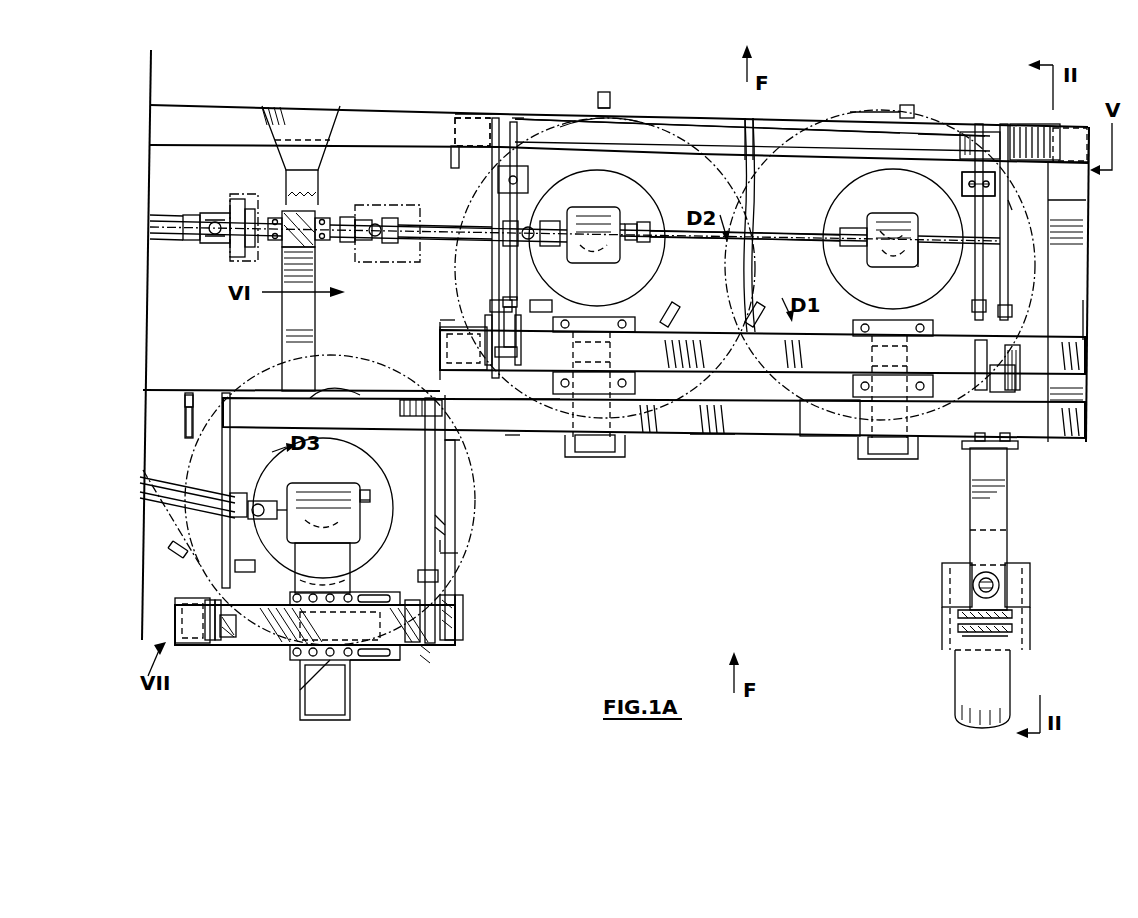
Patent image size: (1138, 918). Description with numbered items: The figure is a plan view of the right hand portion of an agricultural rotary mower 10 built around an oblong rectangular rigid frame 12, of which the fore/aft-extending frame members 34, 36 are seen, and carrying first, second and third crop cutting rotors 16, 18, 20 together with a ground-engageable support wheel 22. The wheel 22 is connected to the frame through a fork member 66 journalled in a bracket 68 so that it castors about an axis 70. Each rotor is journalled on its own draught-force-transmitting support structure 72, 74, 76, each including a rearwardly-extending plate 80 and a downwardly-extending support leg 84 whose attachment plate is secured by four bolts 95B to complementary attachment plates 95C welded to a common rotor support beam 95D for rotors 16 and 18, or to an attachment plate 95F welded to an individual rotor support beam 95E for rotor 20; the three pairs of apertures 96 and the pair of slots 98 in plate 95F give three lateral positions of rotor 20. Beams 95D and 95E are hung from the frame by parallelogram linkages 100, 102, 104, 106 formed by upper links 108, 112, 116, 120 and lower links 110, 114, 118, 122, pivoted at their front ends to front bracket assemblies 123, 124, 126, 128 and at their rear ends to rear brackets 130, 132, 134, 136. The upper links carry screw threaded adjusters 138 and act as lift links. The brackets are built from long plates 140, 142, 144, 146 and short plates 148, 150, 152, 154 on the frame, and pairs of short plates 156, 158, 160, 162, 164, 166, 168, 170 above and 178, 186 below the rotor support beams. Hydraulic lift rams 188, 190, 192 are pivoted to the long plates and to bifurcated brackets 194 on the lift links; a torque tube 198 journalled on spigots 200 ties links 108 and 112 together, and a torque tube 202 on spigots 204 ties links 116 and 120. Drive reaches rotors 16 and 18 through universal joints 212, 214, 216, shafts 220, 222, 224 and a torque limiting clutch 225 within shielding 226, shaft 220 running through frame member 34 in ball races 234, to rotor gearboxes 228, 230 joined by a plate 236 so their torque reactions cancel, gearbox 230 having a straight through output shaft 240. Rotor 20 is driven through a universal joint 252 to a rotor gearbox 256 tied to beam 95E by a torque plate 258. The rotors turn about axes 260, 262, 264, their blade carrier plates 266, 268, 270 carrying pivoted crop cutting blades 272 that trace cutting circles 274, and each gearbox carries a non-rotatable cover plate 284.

The agricultural rotary mower 10 is at (608, 530).
The frame 12 is at (1093, 122).
The first crop cutting rotor 16 is at (932, 103).
The second crop cutting rotor 18 is at (640, 101).
The third crop cutting rotor 20 is at (472, 492).
The ground-engageable support wheel 22 is at (953, 682).
The fore/aft-extending frame member 34 is at (282, 327).
The fore/aft-extending frame member 36 is at (1089, 320).
The fork member 66 is at (1034, 568).
The bracket 68 is at (972, 505).
The axis 70 is at (972, 585).
The support structure 72 is at (826, 428).
The support structure 74 is at (572, 432).
The support structure 76 is at (298, 672).
The rearwardly-extending plate 80 is at (612, 457).
The support leg 84 is at (597, 452).
The apertures 96 is at (332, 600).
The slots 98 is at (390, 658).
The parallelogram linkage 100 is at (1032, 220).
The parallelogram linkage 102 is at (507, 172).
The parallelogram linkage 104 is at (455, 546).
The parallelogram linkage 106 is at (185, 606).
The upper link 108 is at (975, 240).
The lower link 110 is at (1012, 207).
The upper link 112 is at (524, 120).
The lower link 114 is at (470, 165).
The upper link 116 is at (440, 531).
The lower link 118 is at (440, 520).
The upper link 120 is at (193, 586).
The lower link 122 is at (218, 408).
The front bracket assembly 123 is at (986, 118).
The front bracket assembly 124 is at (490, 114).
The front bracket assembly 126 is at (509, 438).
The front bracket assembly 128 is at (224, 392).
The rear bracket 130 is at (1004, 367).
The rear bracket 132 is at (478, 362).
The rear bracket 134 is at (455, 637).
The rear bracket 136 is at (218, 630).
The screw threaded adjuster 138 is at (498, 300).
The long plate 140 is at (1045, 140).
The long plate 142 is at (505, 117).
The long plate 144 is at (456, 436).
The long plate 146 is at (224, 392).
The short plate 148 is at (1005, 137).
The short plate 150 is at (480, 122).
The short plate 152 is at (454, 470).
The short plate 154 is at (215, 428).
The short plate 156 is at (972, 370).
The short plate 158 is at (968, 362).
The short plate 160 is at (540, 300).
The short plate 162 is at (480, 326).
The short plate 164 is at (446, 602).
The short plate 166 is at (413, 640).
The short plate 168 is at (252, 607).
The short plate 170 is at (236, 634).
The short plate 178 is at (442, 326).
The short plate 186 is at (212, 628).
The hydraulic lift ram 188 is at (965, 185).
The hydraulic lift ram 190 is at (521, 172).
The hydraulic lift ram 192 is at (320, 398).
The bifurcated bracket 194 is at (531, 180).
The torque tube 198 is at (684, 125).
The spigots 200 is at (960, 137).
The torque tube 202 is at (330, 512).
The spigots 204 is at (438, 397).
The universal joint 212 is at (215, 248).
The universal joint 214 is at (350, 222).
The universal joint 216 is at (520, 245).
The shaft 220 is at (282, 218).
The shaft 222 is at (410, 226).
The shaft 224 is at (688, 245).
The torque limiting clutch 225 is at (232, 205).
The shielding 226 is at (232, 212).
The rotor gearbox 228 is at (912, 257).
The rotor gearbox 230 is at (646, 115).
The ball races 234 is at (290, 212).
The plate 236 is at (758, 233).
The straight through drive output shaft 240 is at (640, 225).
The universal joint 252 is at (272, 500).
The rotor gearbox 256 is at (362, 506).
The torque plate 258 is at (320, 560).
The rotor axis 260 is at (888, 242).
The rotor axis 262 is at (608, 200).
The rotor axis 264 is at (372, 480).
The blade carrier plate 266 is at (905, 112).
The blade carrier plate 268 is at (607, 94).
The blade carrier plate 270 is at (458, 553).
The crop cutting blades 272 is at (1087, 290).
The cutting circles 274 is at (752, 125).
The cover plate 284 is at (905, 112).
The bolts 95B is at (862, 320).
The complementary attachment plates 95C is at (630, 435).
The rotor support beam 95D is at (712, 432).
The rotor support beam 95E is at (452, 600).
The complementary attachment plate 95F is at (432, 660).